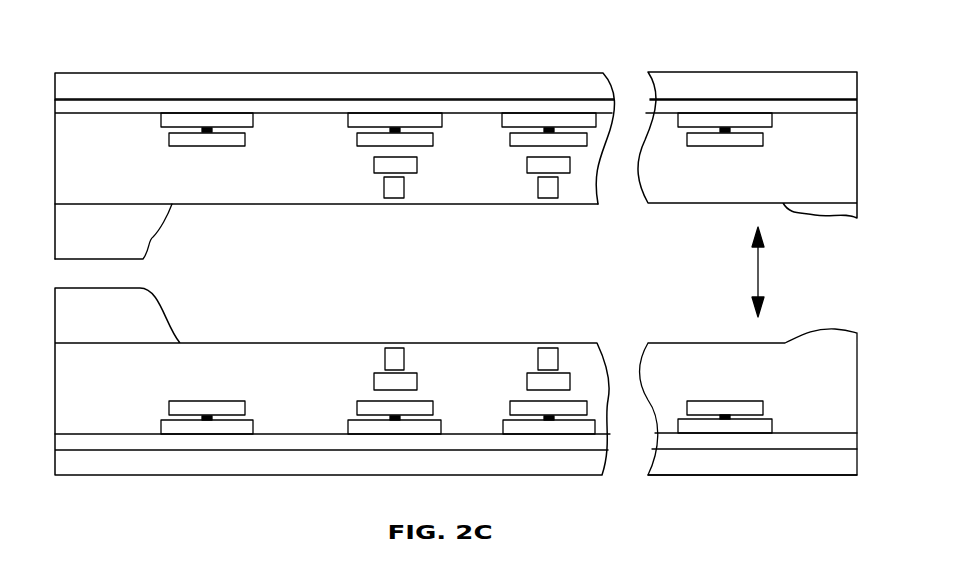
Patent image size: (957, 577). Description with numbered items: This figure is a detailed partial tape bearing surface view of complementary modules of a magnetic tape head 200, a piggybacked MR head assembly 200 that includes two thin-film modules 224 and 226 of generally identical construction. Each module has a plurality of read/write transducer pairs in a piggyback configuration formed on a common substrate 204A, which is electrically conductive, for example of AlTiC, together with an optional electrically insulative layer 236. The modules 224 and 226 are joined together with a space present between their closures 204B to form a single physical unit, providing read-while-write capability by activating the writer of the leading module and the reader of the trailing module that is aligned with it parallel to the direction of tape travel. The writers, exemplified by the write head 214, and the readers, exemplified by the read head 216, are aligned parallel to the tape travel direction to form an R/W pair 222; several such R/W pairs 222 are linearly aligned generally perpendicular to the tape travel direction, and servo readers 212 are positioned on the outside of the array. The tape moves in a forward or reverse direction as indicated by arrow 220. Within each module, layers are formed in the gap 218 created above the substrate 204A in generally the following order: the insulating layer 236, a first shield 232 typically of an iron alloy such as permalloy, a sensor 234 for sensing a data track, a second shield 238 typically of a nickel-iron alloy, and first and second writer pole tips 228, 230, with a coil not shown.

The magnetic tape head 200 is at (334, 140).
The common substrate 204A is at (334, 166).
The closure 204B is at (158, 240).
The servo reader 212 is at (245, 397).
The write head 214 is at (386, 347).
The read head 216 is at (377, 400).
The gap 218 is at (253, 204).
The arrow 220 is at (760, 277).
The R/W pair 222 is at (377, 352).
The thin-film module 224 is at (780, 72).
The thin-film module 226 is at (767, 475).
The first writer pole tip 228 is at (375, 383).
The second writer pole tip 230 is at (387, 357).
The first shield 232 is at (350, 423).
The sensor 234 is at (356, 412).
The electrically insulative layer 236 is at (795, 435).
The second shield 238 is at (350, 405).